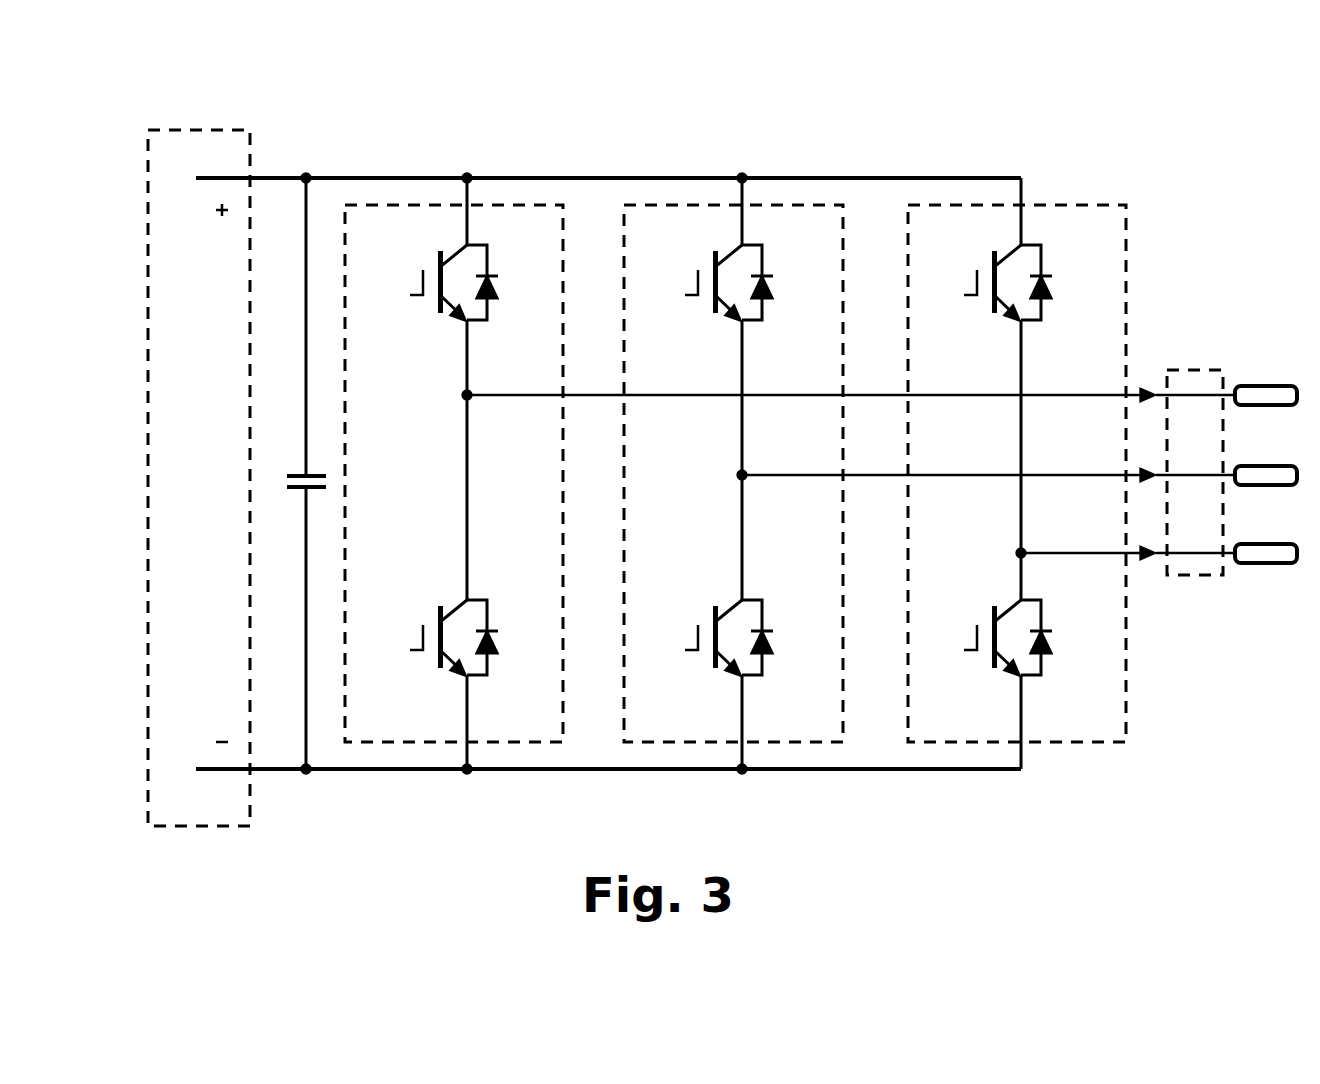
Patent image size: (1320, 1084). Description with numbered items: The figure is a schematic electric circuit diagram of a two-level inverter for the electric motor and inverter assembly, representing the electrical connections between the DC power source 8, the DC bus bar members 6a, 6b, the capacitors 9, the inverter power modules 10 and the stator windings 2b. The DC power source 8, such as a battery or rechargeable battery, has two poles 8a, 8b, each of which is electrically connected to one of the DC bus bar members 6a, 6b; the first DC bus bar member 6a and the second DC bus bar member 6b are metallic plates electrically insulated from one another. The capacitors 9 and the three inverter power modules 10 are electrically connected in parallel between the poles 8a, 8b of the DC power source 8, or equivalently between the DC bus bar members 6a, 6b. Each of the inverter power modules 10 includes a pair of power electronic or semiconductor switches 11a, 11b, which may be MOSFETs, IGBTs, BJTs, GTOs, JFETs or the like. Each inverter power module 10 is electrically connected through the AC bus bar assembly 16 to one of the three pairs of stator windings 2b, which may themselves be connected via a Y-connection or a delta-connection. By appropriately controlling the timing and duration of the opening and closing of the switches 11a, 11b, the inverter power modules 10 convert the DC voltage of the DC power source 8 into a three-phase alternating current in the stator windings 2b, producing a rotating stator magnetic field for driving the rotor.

The stator windings 2b is at (1267, 598).
The first DC bus bar member 6a is at (378, 178).
The second DC bus bar member 6b is at (376, 774).
The DC power source 8 is at (146, 280).
The pole of the DC power source 8a is at (196, 178).
The pole of the DC power source 8b is at (196, 769).
The capacitors 9 is at (275, 505).
The inverter power modules 10 is at (466, 434).
The power electronic switch 11a is at (432, 330).
The power electronic switch 11b is at (430, 600).
The AC bus bar assembly 16 is at (1197, 370).